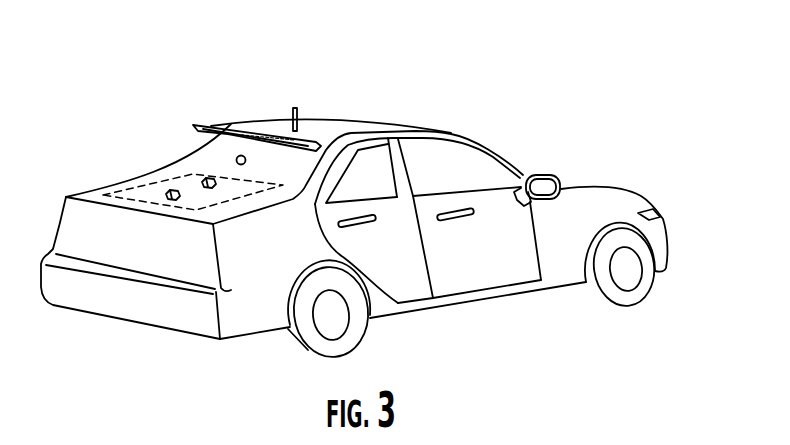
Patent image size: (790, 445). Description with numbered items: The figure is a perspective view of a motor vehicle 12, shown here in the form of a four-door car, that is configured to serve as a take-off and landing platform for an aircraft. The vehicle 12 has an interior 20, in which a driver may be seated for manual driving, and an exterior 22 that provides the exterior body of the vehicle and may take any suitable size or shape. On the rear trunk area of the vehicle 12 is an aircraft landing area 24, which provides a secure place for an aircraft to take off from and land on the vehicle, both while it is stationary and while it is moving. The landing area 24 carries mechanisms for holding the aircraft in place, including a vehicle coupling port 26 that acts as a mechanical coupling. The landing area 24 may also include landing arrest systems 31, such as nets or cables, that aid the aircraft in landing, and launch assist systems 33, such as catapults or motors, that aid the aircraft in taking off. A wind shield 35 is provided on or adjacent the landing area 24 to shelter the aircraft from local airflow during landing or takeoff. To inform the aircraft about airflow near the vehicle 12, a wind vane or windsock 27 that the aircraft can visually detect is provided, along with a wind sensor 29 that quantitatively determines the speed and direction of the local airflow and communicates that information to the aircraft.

The motor vehicle 12 is at (473, 91).
The interior 20 is at (463, 166).
The exterior 22 is at (567, 208).
The aircraft landing area 24 is at (197, 175).
The vehicle coupling port 26 is at (238, 153).
The wind vane or windsock 27 is at (329, 95).
The wind sensor 29 is at (297, 112).
The landing arrest system 31 is at (153, 159).
The launch assist system 33 is at (200, 179).
The wind shield 35 is at (228, 127).